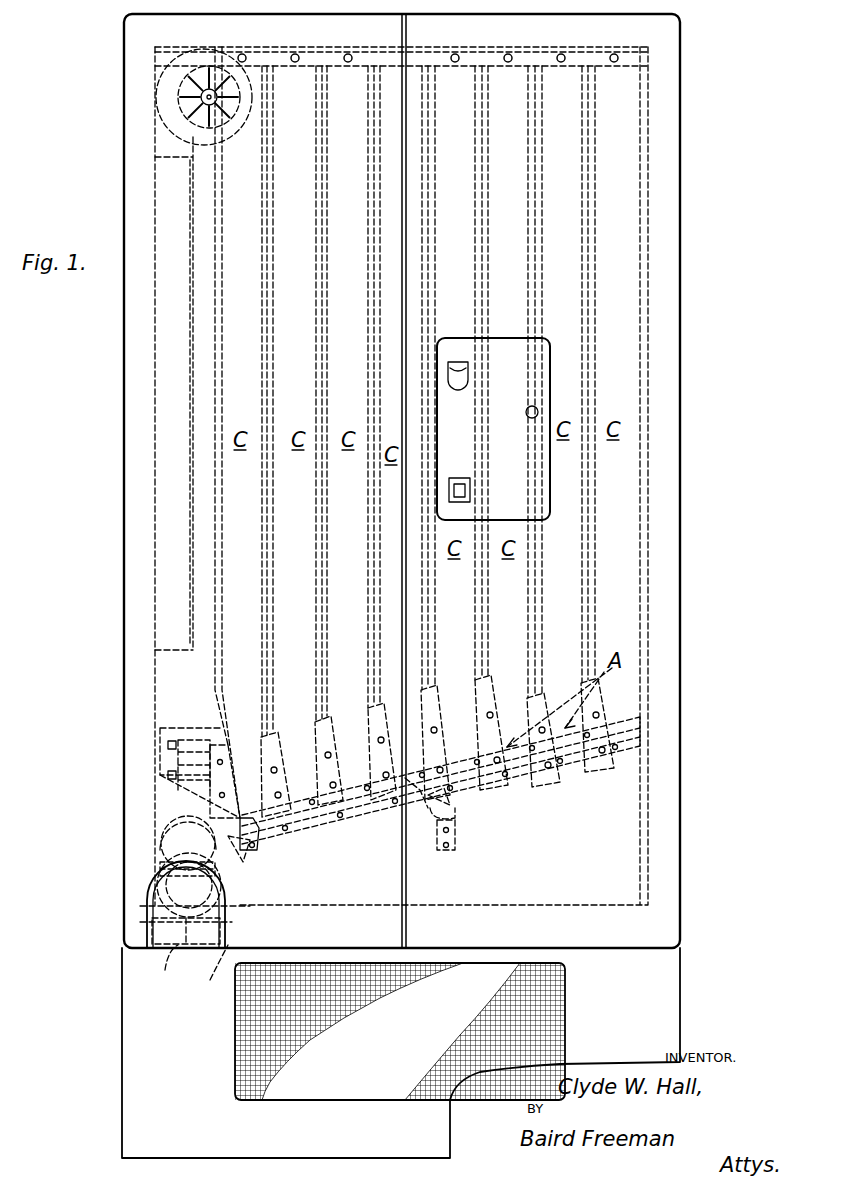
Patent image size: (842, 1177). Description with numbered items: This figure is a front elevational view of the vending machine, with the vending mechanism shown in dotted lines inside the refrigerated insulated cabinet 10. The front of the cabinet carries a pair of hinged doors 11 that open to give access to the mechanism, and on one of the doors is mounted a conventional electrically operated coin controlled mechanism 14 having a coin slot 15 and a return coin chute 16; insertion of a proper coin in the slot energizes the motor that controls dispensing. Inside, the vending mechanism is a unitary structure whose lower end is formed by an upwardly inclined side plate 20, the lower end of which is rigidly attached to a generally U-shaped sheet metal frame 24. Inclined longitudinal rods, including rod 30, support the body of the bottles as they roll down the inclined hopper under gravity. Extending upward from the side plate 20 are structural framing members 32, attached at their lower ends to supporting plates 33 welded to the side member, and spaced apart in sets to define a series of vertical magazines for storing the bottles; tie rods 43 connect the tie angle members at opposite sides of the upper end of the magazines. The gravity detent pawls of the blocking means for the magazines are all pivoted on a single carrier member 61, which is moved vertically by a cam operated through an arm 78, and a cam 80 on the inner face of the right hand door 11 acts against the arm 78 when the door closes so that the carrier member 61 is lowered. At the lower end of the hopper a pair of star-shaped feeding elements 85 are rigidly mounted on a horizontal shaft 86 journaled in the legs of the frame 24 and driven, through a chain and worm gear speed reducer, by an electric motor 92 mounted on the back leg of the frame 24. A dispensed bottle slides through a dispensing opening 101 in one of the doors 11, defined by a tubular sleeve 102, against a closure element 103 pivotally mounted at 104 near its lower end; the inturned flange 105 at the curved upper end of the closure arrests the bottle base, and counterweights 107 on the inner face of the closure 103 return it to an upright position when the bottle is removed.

The insulated cabinet 10 is at (668, 604).
The hinged doors 11 is at (170, 680).
The coin controlled mechanism 14 is at (512, 376).
The coin slot 15 is at (452, 368).
The return coin chute 16 is at (460, 488).
The side plate 20 is at (245, 832).
The sheet metal frame 24 is at (178, 800).
The bottle supporting rod 30 is at (479, 53).
The structural framing members 32 is at (318, 602).
The supporting plates 33 is at (345, 752).
The tie rods 43 is at (348, 64).
The single carrier member 61 is at (300, 814).
The arm 78 is at (426, 812).
The cam 80 is at (446, 820).
The feeding elements 85 is at (240, 846).
The horizontal shaft 86 is at (250, 857).
The electric motor 92 is at (190, 745).
The dispensing opening 101 is at (187, 958).
The tubular sleeve 102 is at (218, 908).
The closure element 103 is at (152, 913).
The pivot 104 is at (218, 926).
The flange 105 is at (150, 896).
The counterweights 107 is at (196, 969).